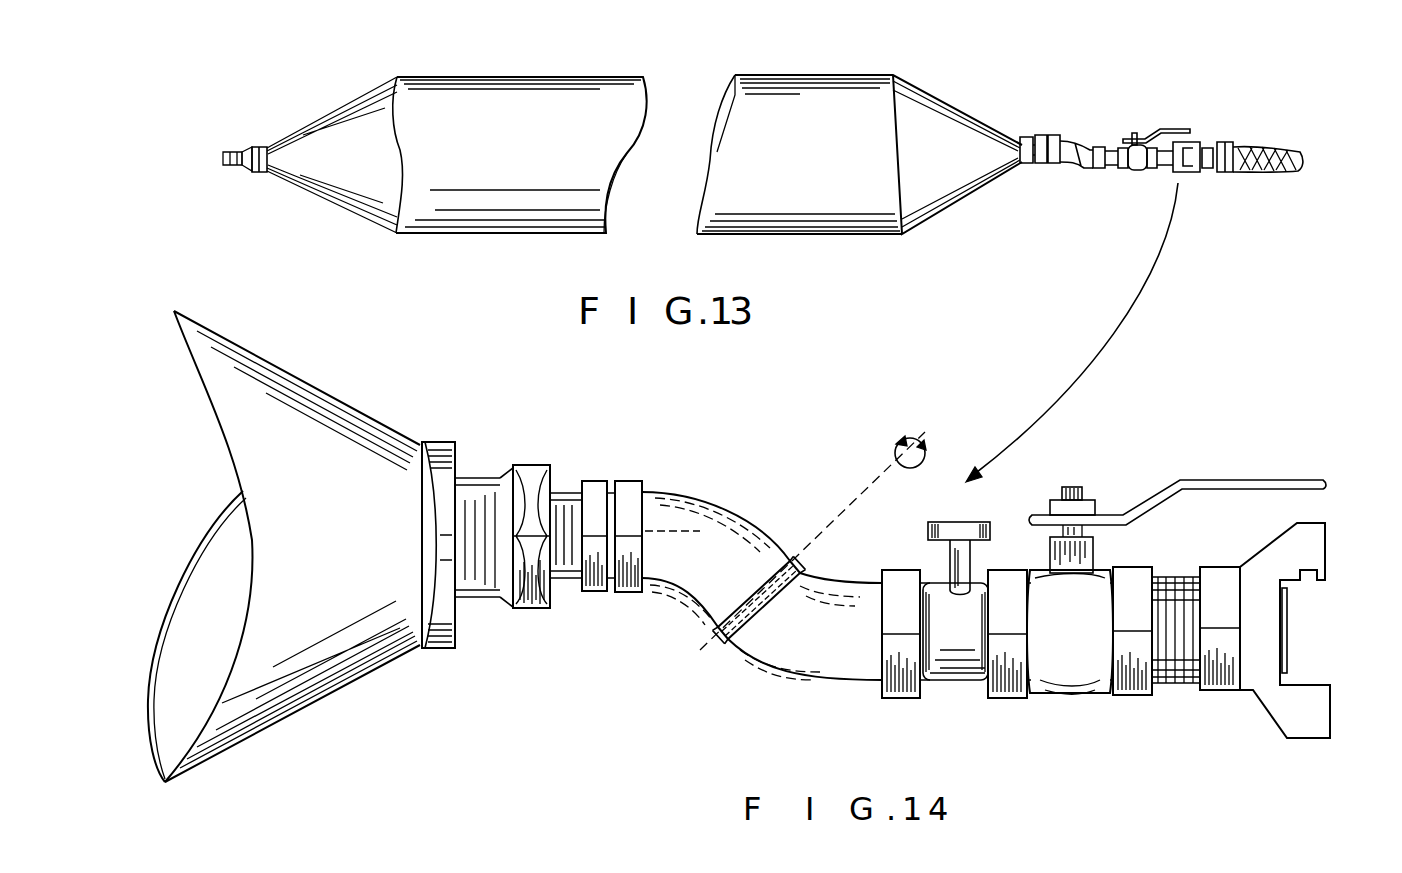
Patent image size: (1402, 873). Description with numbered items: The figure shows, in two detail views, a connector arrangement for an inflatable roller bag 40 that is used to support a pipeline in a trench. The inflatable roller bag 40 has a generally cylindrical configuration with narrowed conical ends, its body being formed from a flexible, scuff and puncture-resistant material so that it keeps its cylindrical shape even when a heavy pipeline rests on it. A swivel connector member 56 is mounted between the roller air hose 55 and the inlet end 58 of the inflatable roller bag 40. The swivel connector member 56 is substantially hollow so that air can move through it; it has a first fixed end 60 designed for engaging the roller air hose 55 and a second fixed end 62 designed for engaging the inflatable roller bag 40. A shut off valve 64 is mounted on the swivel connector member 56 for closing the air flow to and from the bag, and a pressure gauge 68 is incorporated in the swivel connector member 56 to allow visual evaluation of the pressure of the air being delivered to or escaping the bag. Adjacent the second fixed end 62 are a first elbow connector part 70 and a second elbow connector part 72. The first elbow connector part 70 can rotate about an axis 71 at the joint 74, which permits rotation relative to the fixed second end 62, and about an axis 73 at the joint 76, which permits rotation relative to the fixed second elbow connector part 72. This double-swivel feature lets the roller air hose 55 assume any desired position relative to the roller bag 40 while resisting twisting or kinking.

In FIG. 13, the inflatable roller bag 40 is at (548, 74).
In FIG. 14, the inflatable roller bag 40 is at (376, 415).
In FIG. 13, the roller air hose 55 is at (1277, 178).
In FIG. 13, the swivel connector member 56 is at (1072, 170).
In FIG. 14, the swivel connector member 56 is at (747, 520).
In FIG. 13, the inlet end 58 is at (968, 112).
In FIG. 14, the first fixed end 60 is at (1305, 553).
In FIG. 14, the second fixed end 62 is at (482, 478).
In FIG. 13, the shut off valve 64 is at (1168, 126).
In FIG. 14, the shut off valve 64 is at (1243, 480).
In FIG. 14, the pressure gauge 68 is at (968, 522).
In FIG. 14, the first elbow connector part 70 is at (697, 490).
In FIG. 14, the axis 71 is at (687, 531).
In FIG. 14, the second elbow connector part 72 is at (830, 663).
In FIG. 14, the axis 73 is at (920, 470).
In FIG. 14, the joint 74 is at (632, 480).
In FIG. 14, the joint 76 is at (705, 650).